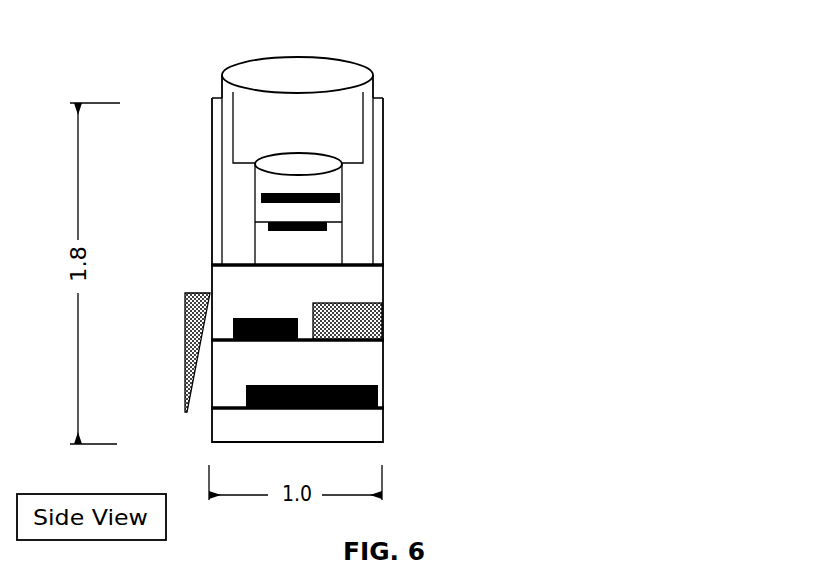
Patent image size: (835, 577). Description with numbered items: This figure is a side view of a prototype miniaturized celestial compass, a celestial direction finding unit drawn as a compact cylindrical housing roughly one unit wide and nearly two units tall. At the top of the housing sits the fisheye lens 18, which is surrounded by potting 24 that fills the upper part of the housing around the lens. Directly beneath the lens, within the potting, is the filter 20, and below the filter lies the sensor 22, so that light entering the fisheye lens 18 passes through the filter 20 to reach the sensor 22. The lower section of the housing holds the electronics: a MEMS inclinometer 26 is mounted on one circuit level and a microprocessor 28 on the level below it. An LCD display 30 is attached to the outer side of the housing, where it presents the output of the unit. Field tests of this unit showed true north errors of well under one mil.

The fisheye lens 18 is at (386, 72).
The potting 24 is at (384, 118).
The filter 20 is at (388, 203).
The sensor 22 is at (329, 236).
The MEMS inclinometer 26 is at (386, 318).
The microprocessor 28 is at (386, 397).
The LCD display 30 is at (157, 352).